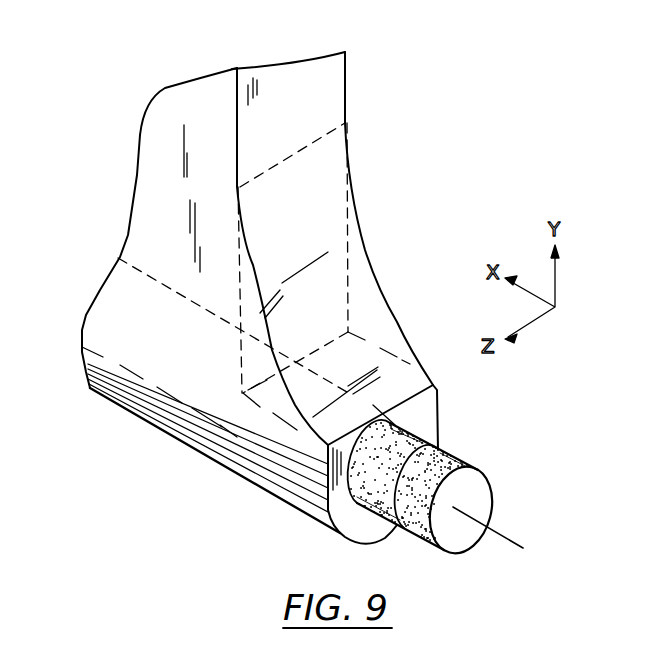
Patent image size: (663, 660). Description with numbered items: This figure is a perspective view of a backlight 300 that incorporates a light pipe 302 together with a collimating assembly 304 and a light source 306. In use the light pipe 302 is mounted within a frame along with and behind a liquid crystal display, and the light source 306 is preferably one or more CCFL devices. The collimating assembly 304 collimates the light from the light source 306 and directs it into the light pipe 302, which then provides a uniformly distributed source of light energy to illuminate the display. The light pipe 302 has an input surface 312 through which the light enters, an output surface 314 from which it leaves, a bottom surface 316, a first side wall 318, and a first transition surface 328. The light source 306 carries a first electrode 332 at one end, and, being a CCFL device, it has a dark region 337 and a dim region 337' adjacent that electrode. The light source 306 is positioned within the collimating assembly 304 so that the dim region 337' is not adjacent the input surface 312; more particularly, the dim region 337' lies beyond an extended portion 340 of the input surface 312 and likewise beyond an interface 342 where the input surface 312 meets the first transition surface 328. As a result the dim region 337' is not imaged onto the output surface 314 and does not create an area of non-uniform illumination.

The backlight 300 is at (548, 152).
The light pipe 302 is at (183, 125).
The collimating assembly 304 is at (197, 443).
The light source 306 is at (517, 478).
The input surface 312 is at (165, 370).
The output surface 314 is at (187, 173).
The bottom surface 316 is at (347, 68).
The first side wall 318 is at (297, 92).
The first transition surface 328 is at (363, 273).
The first electrode 332 is at (505, 537).
The dark region 337 is at (487, 481).
The dim region 337' is at (463, 452).
The extended portion 340 is at (283, 413).
The interface 342 is at (440, 397).